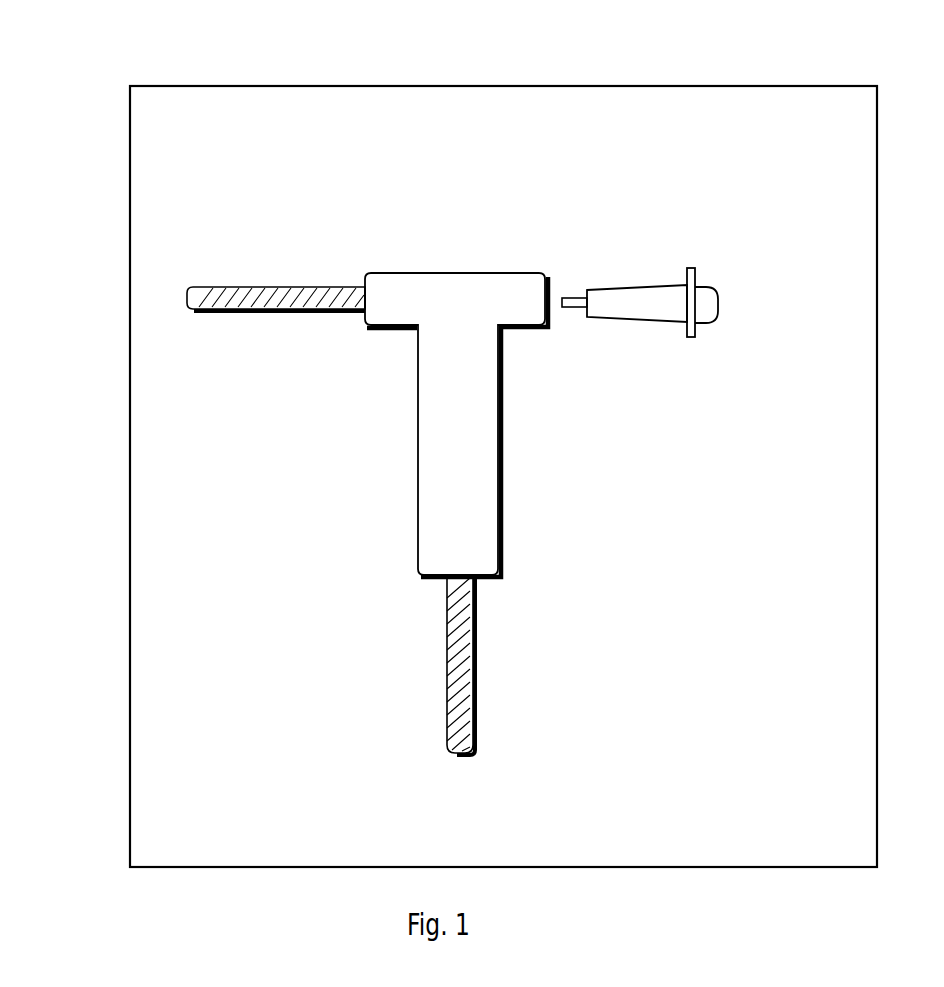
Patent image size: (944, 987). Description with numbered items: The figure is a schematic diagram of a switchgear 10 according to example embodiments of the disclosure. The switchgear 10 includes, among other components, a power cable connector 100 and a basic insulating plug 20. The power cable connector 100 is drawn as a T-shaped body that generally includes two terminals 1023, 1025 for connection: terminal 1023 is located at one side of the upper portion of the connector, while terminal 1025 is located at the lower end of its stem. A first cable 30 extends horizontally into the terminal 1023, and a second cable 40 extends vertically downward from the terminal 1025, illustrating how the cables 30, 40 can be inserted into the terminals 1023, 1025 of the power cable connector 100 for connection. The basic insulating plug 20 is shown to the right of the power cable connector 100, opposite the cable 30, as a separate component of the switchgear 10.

The switchgear 10 is at (100, 72).
The basic insulating plug 20 is at (697, 274).
The cable 30 is at (197, 292).
The cable 40 is at (475, 693).
The power cable connector 100 is at (445, 272).
The terminal 1023 is at (365, 280).
The terminal 1025 is at (492, 583).